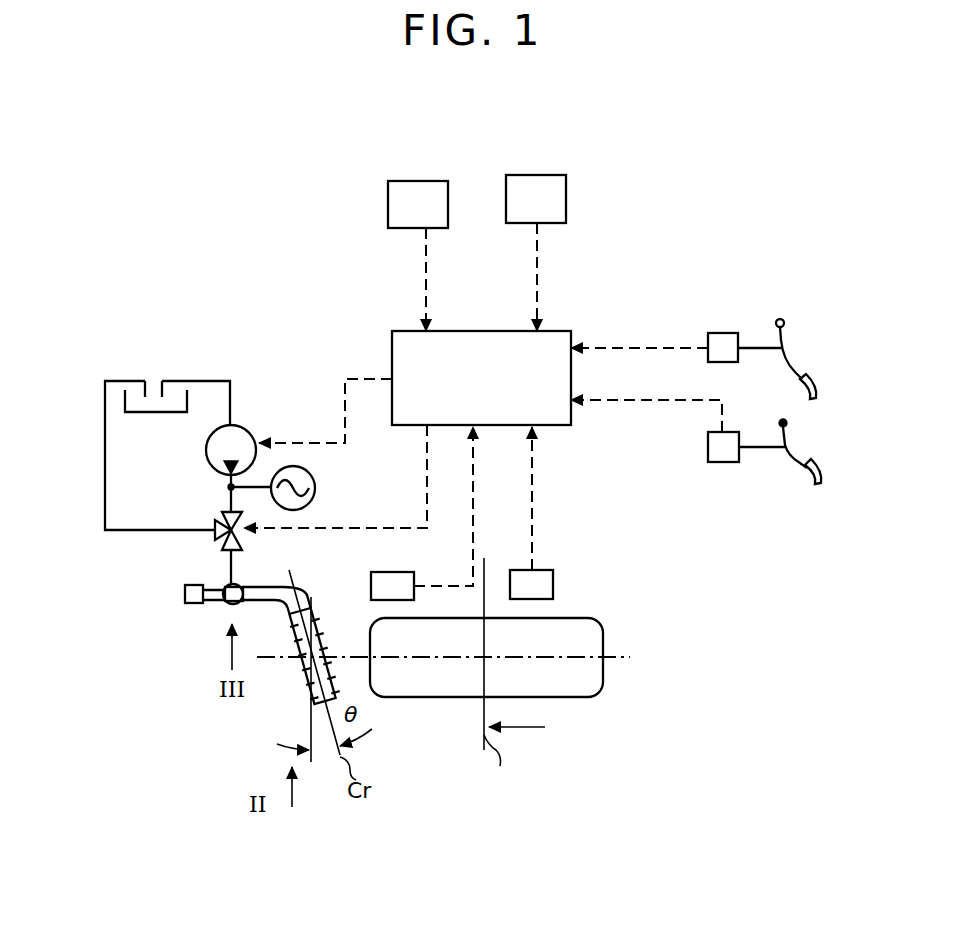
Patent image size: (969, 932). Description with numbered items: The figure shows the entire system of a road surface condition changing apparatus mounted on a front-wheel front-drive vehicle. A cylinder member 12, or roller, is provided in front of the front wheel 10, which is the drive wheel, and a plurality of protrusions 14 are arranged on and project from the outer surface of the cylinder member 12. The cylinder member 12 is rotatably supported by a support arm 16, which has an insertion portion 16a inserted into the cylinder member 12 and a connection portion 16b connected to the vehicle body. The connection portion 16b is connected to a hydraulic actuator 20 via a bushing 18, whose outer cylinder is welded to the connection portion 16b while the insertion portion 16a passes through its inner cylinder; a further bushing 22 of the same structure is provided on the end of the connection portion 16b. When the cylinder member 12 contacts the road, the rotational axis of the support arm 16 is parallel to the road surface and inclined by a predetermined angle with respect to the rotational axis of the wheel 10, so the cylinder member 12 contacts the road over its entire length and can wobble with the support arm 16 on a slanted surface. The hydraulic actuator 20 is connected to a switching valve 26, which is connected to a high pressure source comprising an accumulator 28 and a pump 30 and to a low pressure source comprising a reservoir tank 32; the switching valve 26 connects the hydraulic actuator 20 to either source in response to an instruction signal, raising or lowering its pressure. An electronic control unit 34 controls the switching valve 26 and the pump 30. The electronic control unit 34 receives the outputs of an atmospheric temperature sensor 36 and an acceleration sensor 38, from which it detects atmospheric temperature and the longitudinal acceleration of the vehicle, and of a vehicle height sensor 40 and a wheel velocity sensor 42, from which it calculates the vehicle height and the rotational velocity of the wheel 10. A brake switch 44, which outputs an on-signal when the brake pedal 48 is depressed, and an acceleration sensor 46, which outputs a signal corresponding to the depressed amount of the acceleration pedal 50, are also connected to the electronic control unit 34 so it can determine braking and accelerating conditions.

The front wheel 10 is at (603, 626).
The cylinder member 12 is at (302, 678).
The protrusions 14 is at (292, 642).
The support arm 16 is at (273, 585).
The insertion portion 16a is at (302, 592).
The connection portion 16b is at (256, 601).
The bushing 18 is at (230, 605).
The hydraulic actuator 20 is at (230, 585).
The bushing 22 is at (195, 604).
The switching valve 26 is at (220, 522).
The accumulator 28 is at (315, 490).
The pump 30 is at (254, 434).
The reservoir tank 32 is at (150, 415).
The electronic control unit 34 is at (392, 356).
The atmospheric temperature sensor 36 is at (421, 181).
The acceleration sensor 38 is at (537, 175).
The vehicle height sensor 40 is at (400, 572).
The wheel velocity sensor 42 is at (545, 570).
The brake switch 44 is at (722, 333).
The acceleration sensor 46 is at (722, 462).
The brake pedal 48 is at (788, 362).
The acceleration pedal 50 is at (800, 465).